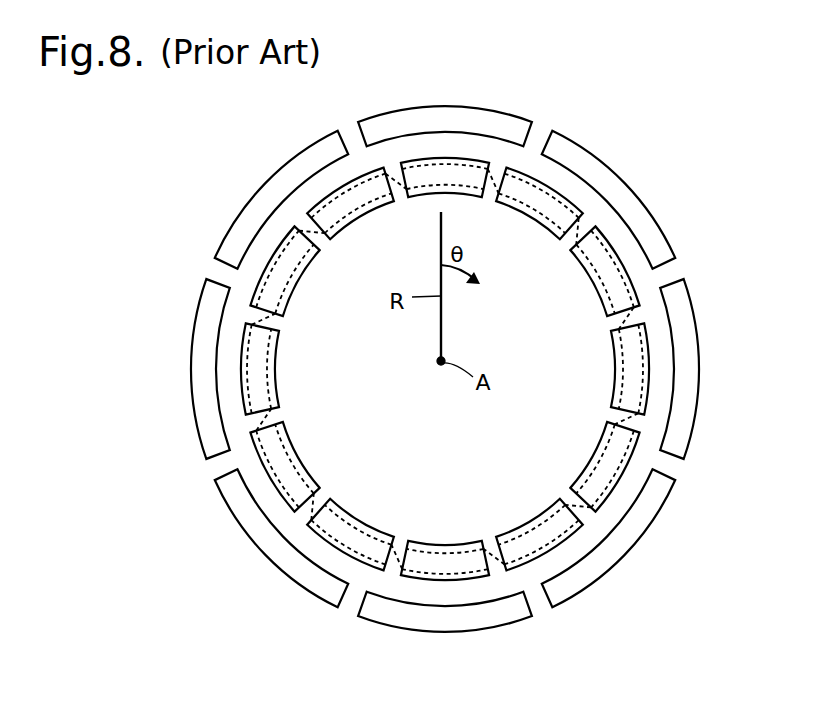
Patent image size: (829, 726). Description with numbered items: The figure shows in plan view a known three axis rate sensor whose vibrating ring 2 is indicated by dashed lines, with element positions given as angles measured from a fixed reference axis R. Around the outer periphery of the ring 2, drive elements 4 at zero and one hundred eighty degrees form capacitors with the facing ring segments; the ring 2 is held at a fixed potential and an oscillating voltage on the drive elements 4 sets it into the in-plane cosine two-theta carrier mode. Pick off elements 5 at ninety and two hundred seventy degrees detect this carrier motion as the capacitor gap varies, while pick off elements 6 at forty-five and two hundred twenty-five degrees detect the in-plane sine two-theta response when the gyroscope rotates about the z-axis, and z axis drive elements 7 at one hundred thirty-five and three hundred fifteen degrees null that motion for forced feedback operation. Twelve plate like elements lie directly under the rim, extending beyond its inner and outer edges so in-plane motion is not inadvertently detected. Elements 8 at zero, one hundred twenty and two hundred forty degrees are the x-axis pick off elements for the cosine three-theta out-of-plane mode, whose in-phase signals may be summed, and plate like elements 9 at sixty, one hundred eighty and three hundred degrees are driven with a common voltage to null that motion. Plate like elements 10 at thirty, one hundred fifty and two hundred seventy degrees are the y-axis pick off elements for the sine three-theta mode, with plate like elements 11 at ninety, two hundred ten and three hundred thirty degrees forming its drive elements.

The ring 2 is at (570, 237).
The drive elements 4 is at (438, 118).
The pick off elements 5 is at (203, 357).
The pick off elements 6 is at (612, 190).
The z axis drive elements 7 is at (289, 190).
The x-axis pick off elements 8 is at (419, 176).
The plate like drive elements 9 is at (600, 262).
The y-axis pick off elements 10 is at (530, 195).
The y-axis drive elements 11 is at (337, 212).